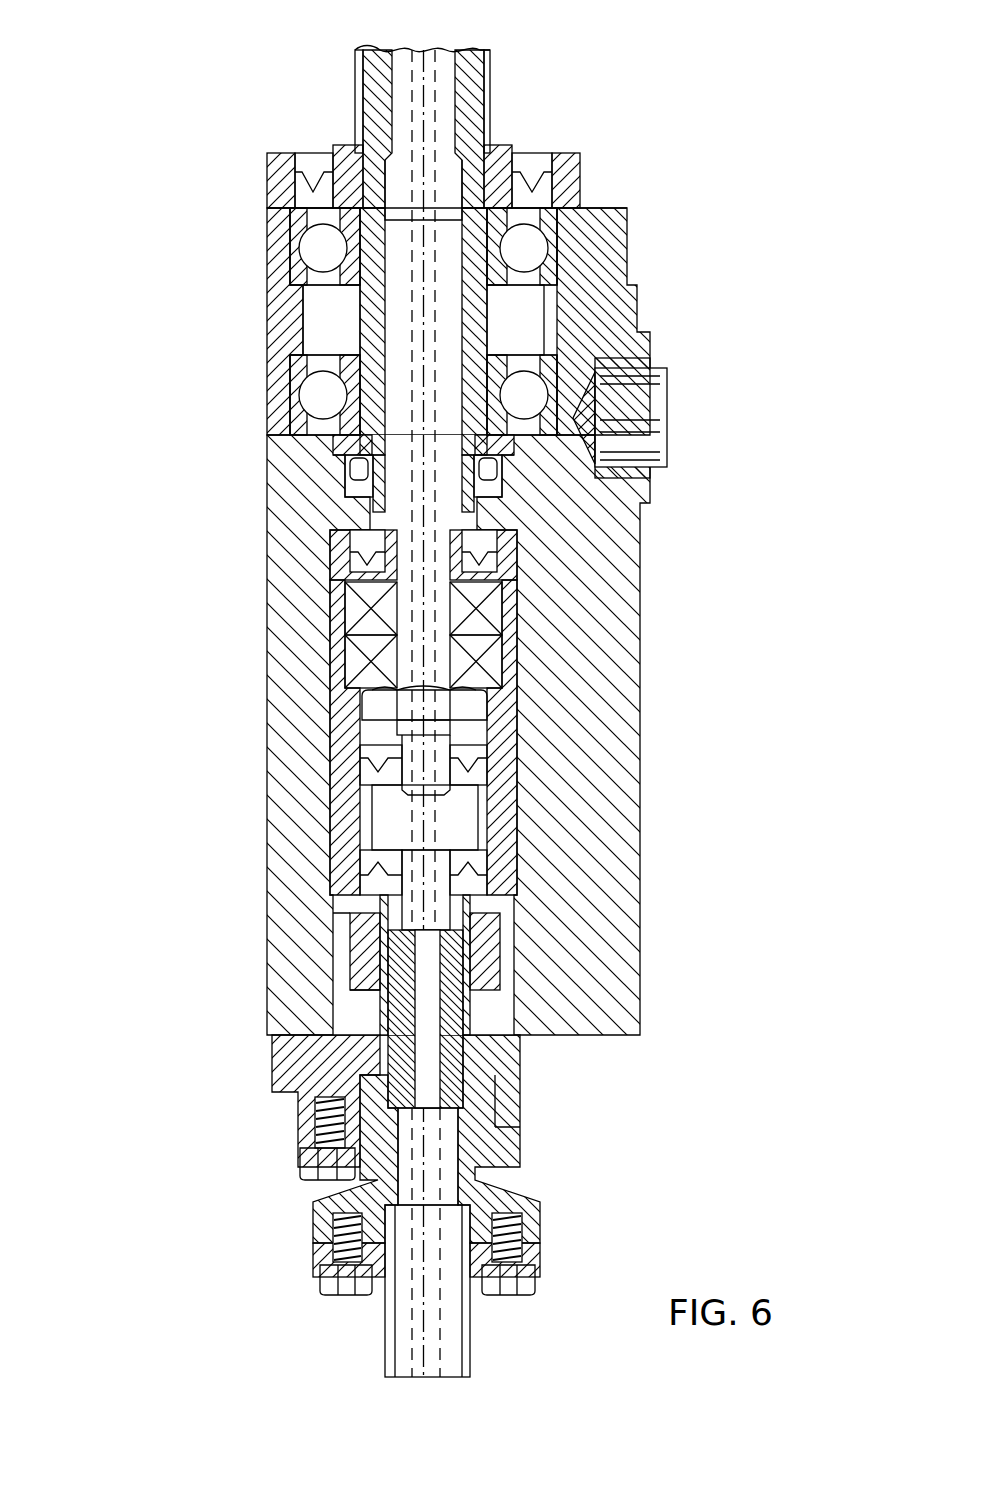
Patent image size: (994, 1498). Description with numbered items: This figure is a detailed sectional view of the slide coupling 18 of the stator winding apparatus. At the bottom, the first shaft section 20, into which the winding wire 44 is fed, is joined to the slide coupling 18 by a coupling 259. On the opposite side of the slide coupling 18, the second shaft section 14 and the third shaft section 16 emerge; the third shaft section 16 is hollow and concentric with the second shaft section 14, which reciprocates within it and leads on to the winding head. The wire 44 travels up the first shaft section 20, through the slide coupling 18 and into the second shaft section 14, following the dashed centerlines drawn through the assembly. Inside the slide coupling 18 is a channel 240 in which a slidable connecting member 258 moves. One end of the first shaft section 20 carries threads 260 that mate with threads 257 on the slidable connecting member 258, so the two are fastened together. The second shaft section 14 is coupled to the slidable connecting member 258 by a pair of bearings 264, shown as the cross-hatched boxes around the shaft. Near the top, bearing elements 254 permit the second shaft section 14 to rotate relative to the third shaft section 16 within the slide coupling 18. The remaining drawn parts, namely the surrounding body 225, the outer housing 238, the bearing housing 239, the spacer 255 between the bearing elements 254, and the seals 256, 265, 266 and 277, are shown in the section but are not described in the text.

The second shaft section 14 is at (402, 50).
The third shaft section 16 is at (355, 105).
The winding wire 44 is at (425, 97).
The bearing elements 254 is at (288, 243).
The bearing housing 239 is at (272, 313).
The bearing spacer 255 is at (360, 328).
The seal 256 is at (360, 473).
The housing 238 is at (270, 593).
The seal housing 265 is at (498, 553).
The bearings 264 is at (490, 607).
The body 225 is at (578, 737).
The seal 266 is at (370, 768).
The slidable connecting member 258 is at (510, 790).
The seal 277 is at (368, 887).
The threads 257 is at (477, 907).
The channel 240 is at (345, 1003).
The slide coupling 18 is at (235, 1006).
The threads 260 is at (470, 957).
The coupling 259 is at (495, 1113).
The first shaft section 20 is at (388, 1327).